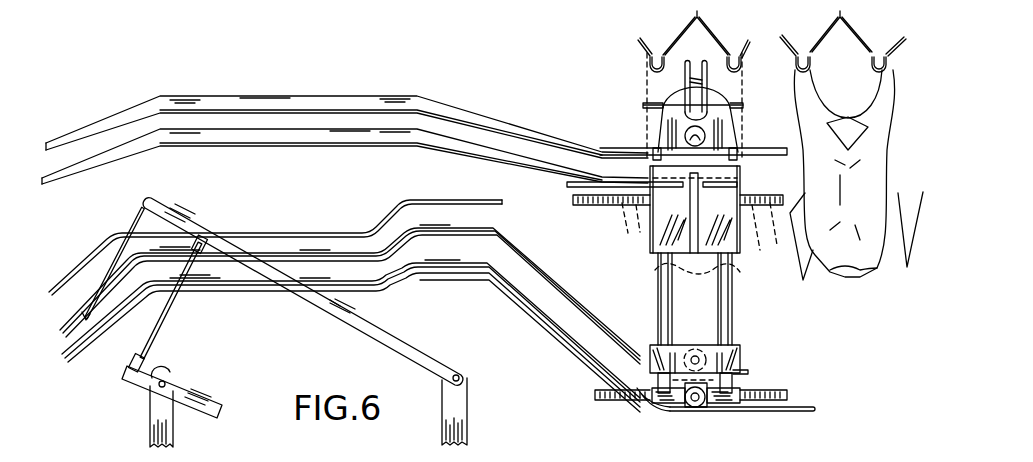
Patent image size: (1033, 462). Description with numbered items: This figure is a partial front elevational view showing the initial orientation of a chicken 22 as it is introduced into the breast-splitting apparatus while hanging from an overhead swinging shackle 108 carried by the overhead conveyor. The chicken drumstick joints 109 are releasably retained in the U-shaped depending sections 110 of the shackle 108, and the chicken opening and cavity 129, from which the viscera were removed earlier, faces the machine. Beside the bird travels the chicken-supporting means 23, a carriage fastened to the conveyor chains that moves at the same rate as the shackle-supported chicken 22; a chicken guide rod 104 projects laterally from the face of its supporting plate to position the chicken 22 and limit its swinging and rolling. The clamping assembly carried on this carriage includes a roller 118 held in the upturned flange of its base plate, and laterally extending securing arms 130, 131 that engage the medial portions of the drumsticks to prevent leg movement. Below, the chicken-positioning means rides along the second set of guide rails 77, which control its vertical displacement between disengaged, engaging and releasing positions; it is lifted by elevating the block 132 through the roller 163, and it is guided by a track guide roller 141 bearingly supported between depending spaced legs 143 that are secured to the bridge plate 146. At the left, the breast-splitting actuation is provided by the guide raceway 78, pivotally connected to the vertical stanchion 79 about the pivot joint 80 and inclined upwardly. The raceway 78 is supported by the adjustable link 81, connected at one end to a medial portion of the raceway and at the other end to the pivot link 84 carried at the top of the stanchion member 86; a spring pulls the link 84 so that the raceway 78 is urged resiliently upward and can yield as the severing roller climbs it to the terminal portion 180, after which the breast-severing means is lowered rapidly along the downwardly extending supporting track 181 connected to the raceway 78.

The chicken 22 is at (882, 270).
The chicken-supporting means 23 is at (661, 240).
The second set of guide rails 77 is at (520, 297).
The guide raceway 78 is at (400, 340).
The vertical stanchion 79 is at (463, 410).
The pivot joint 80 is at (458, 370).
The adjustable link 81 is at (162, 330).
The pivot link 84 is at (203, 397).
The stanchion member 86 is at (148, 413).
The chicken guide rod 104 is at (567, 185).
The overhead swinging shackle 108 is at (818, 27).
The chicken drumstick joints 109 is at (650, 62).
The U-shaped depending sections 110 is at (652, 68).
The roller 118 is at (660, 135).
The chicken opening and cavity 129 is at (850, 125).
The laterally extending securing arm 130 is at (650, 104).
The laterally extending securing arm 131 is at (740, 104).
The block 132 is at (740, 352).
The track guide roller 141 is at (700, 405).
The depending spaced legs 143 is at (683, 400).
The bridge plate 146 is at (748, 372).
The roller 163 is at (695, 348).
The terminal portion 180 is at (160, 207).
The downwardly extending supporting track 181 is at (138, 217).